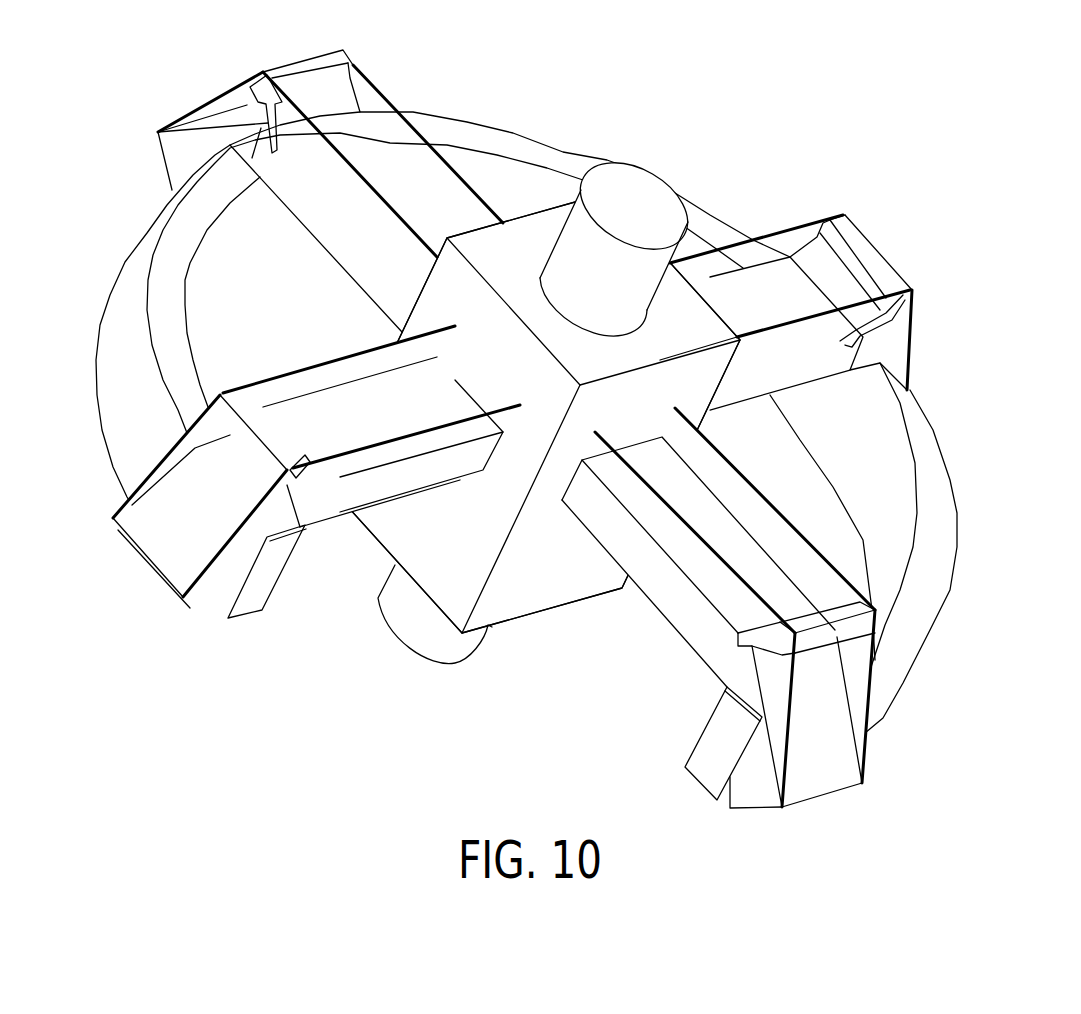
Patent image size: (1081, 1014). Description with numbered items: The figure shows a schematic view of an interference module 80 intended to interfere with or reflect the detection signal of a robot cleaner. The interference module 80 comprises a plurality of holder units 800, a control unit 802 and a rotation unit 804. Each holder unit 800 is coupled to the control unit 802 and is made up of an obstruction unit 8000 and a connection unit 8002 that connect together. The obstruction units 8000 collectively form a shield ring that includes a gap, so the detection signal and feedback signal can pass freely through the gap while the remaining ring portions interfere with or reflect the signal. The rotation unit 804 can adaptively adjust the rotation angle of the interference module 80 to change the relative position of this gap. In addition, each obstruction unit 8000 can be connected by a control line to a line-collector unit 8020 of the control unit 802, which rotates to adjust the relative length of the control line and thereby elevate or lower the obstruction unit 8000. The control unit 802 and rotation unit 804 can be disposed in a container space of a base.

The interference module 80 is at (579, 429).
The holder unit 800 is at (316, 545).
The obstruction unit 8000 is at (305, 695).
The connection unit 8002 is at (337, 507).
The control unit 802 is at (565, 597).
The line-collector unit 8020 is at (668, 217).
The rotation unit 804 is at (418, 637).